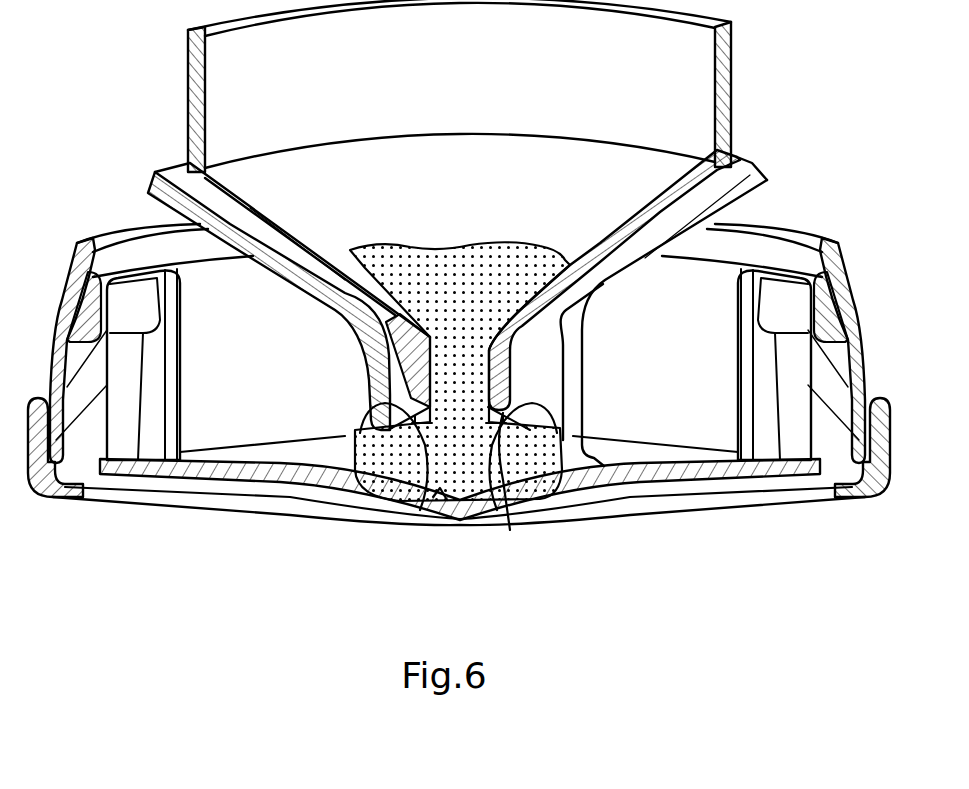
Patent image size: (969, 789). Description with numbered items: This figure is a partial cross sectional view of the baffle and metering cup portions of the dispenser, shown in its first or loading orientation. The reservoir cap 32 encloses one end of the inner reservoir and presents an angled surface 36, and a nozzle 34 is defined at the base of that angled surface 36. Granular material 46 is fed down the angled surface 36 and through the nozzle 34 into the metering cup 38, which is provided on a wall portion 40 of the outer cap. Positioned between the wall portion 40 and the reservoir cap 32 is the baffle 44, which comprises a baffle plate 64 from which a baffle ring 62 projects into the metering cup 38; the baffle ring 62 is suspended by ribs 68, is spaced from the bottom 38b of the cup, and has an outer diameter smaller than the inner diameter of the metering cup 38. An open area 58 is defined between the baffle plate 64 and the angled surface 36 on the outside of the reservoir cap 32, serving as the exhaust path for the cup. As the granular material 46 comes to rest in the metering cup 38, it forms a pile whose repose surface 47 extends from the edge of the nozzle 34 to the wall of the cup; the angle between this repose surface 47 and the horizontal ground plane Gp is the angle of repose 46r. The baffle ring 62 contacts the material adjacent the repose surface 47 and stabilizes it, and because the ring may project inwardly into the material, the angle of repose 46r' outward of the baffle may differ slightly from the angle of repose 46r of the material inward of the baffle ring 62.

The reservoir cap 32 is at (283, 160).
The nozzle 34 is at (462, 333).
The angled surface 36 is at (404, 220).
The metering cup 38 is at (585, 452).
The bottom of cup 38b is at (433, 500).
The wall portion 40 is at (783, 492).
The baffle 44 is at (142, 150).
The granular material 46 is at (485, 483).
The angle of repose 46r is at (394, 493).
The angle of repose outwardly of the baffle 46r' is at (528, 479).
The repose surface 47 is at (372, 395).
The open area 58 is at (205, 208).
The baffle ring 62 is at (510, 530).
The baffle plate 64 is at (310, 303).
The ribs 68 is at (580, 378).
The horizontal ground plane Gp is at (398, 425).